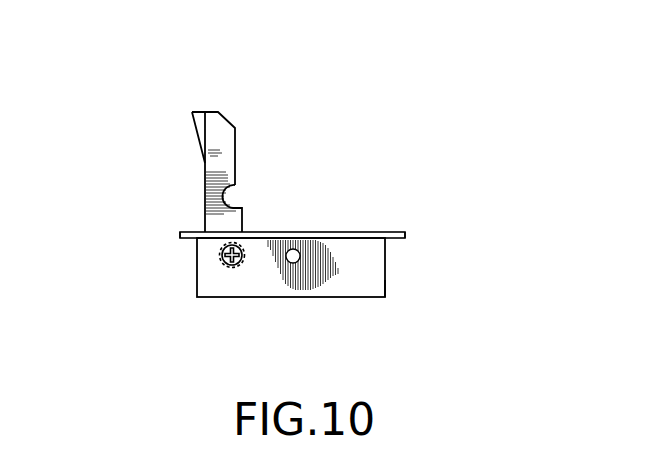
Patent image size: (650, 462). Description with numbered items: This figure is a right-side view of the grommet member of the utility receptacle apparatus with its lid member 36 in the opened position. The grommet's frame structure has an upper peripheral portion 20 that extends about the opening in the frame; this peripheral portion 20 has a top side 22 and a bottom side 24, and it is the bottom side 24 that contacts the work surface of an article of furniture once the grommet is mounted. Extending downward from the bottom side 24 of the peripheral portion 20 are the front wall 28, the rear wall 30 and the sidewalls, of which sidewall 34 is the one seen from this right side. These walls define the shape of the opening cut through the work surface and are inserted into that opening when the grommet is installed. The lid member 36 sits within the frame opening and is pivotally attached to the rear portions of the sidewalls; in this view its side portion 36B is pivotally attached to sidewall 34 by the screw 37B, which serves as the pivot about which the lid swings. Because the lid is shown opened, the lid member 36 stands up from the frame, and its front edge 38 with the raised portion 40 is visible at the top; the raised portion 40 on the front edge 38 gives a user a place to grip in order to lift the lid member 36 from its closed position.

The upper peripheral portion 20 is at (180, 233).
The top side 22 is at (398, 232).
The bottom side 24 is at (398, 240).
The front wall 28 is at (385, 285).
The rear wall 30 is at (197, 265).
The sidewall 34 is at (273, 280).
The lid member 36 is at (205, 180).
The side portion 36B is at (244, 210).
The screw 37B is at (232, 268).
The front edge 38 is at (212, 112).
The raised portion 40 is at (194, 126).